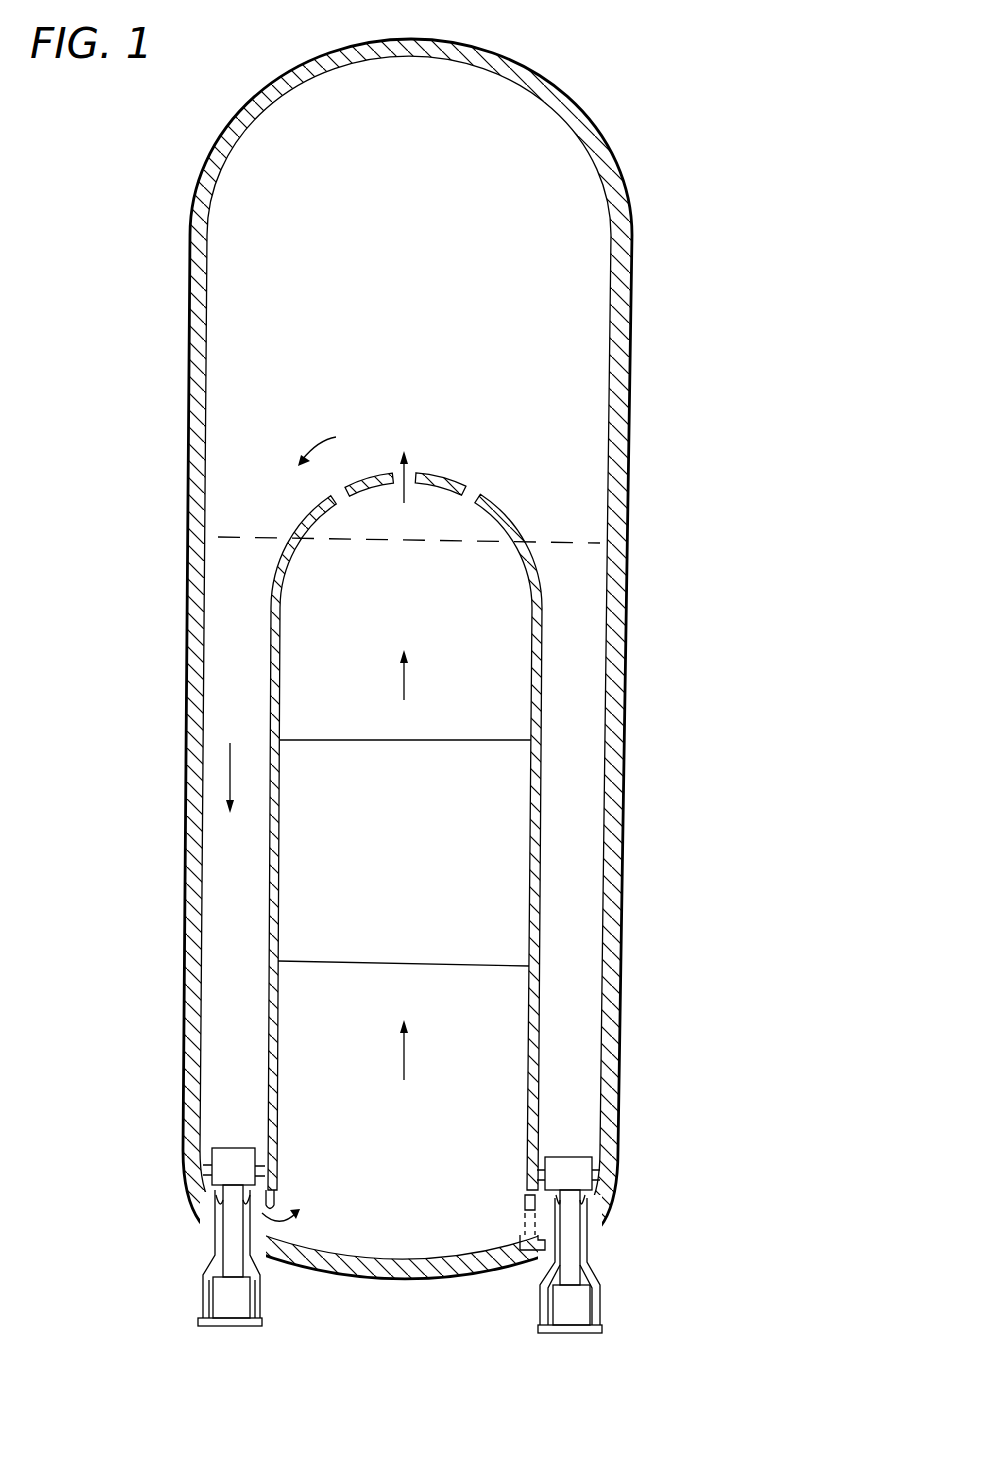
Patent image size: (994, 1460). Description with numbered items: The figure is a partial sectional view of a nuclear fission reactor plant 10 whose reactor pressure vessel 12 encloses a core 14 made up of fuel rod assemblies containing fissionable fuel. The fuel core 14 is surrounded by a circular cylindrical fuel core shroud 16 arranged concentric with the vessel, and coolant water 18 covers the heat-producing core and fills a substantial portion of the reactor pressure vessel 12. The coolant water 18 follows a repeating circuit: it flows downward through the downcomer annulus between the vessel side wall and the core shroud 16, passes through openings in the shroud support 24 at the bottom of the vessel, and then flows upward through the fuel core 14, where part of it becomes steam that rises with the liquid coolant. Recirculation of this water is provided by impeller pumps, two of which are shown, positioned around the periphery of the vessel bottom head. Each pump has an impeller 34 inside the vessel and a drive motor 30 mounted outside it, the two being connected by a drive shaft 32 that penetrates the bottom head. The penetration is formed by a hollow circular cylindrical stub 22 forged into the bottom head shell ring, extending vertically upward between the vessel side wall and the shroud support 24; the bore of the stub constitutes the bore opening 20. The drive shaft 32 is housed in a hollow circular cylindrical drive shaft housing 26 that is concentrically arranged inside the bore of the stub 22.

The nuclear fission reactor plant 10 is at (148, 240).
The reactor pressure vessel 12 is at (632, 250).
The core 14 is at (417, 875).
The fuel core shroud 16 is at (531, 665).
The coolant water 18 is at (417, 575).
The bore opening 20 is at (587, 1262).
The stub 22 is at (528, 1200).
The shroud support 24 is at (527, 1240).
The drive shaft housing 26 is at (587, 1268).
The drive motor 30 is at (578, 1298).
The drive shaft 32 is at (568, 1257).
The impeller 34 is at (578, 1172).